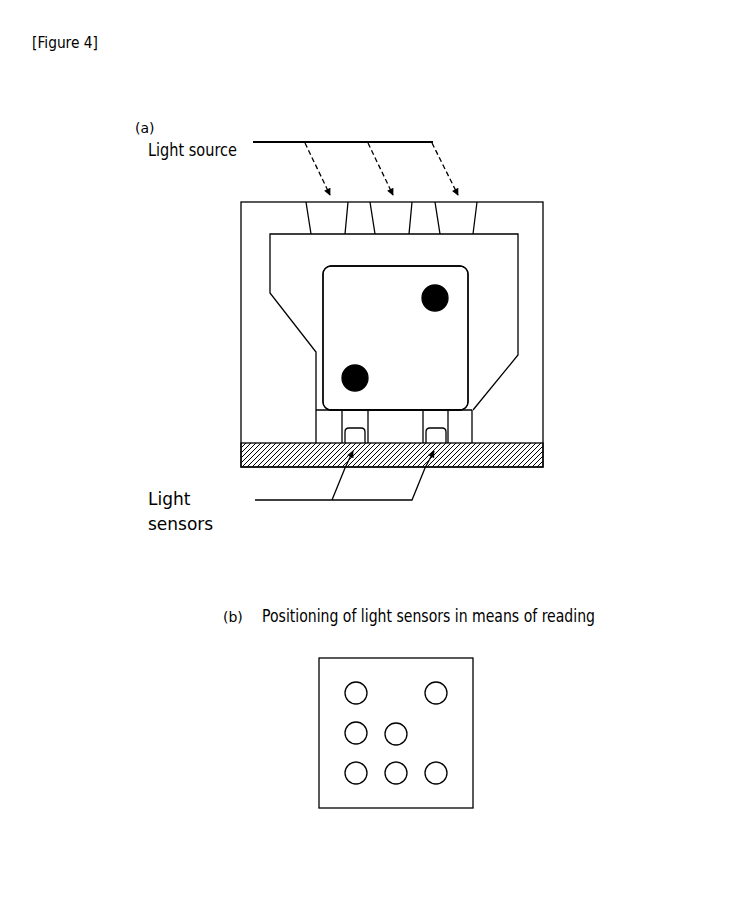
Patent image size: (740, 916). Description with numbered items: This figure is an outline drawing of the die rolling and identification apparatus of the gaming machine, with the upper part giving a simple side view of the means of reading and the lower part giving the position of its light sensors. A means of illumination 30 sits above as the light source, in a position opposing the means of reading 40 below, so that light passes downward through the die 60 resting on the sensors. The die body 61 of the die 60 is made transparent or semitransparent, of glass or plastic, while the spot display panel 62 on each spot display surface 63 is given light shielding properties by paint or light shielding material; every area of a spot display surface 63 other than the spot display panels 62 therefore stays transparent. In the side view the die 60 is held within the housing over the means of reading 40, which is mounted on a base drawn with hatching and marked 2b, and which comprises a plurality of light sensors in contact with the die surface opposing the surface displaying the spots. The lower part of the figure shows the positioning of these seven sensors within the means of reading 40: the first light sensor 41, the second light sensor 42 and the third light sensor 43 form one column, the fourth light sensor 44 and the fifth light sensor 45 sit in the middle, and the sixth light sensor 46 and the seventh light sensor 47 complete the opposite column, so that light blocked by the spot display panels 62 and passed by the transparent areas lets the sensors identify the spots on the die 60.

The means of illumination 30 is at (465, 218).
The die 60 is at (444, 261).
The die body 61 is at (337, 285).
The spot display panel 62 is at (369, 378).
The spot display surface 63 is at (392, 335).
The means of reading 40 is at (463, 428).
The base plate 2b is at (503, 460).
The No. 1 light sensor 41 is at (352, 695).
The No. 2 light sensor 42 is at (350, 735).
The No. 3 light sensor 43 is at (350, 776).
The No. 4 light sensor 44 is at (394, 734).
The No. 5 light sensor 45 is at (397, 774).
The No. 6 light sensor 46 is at (438, 693).
The No. 7 light sensor 47 is at (438, 775).